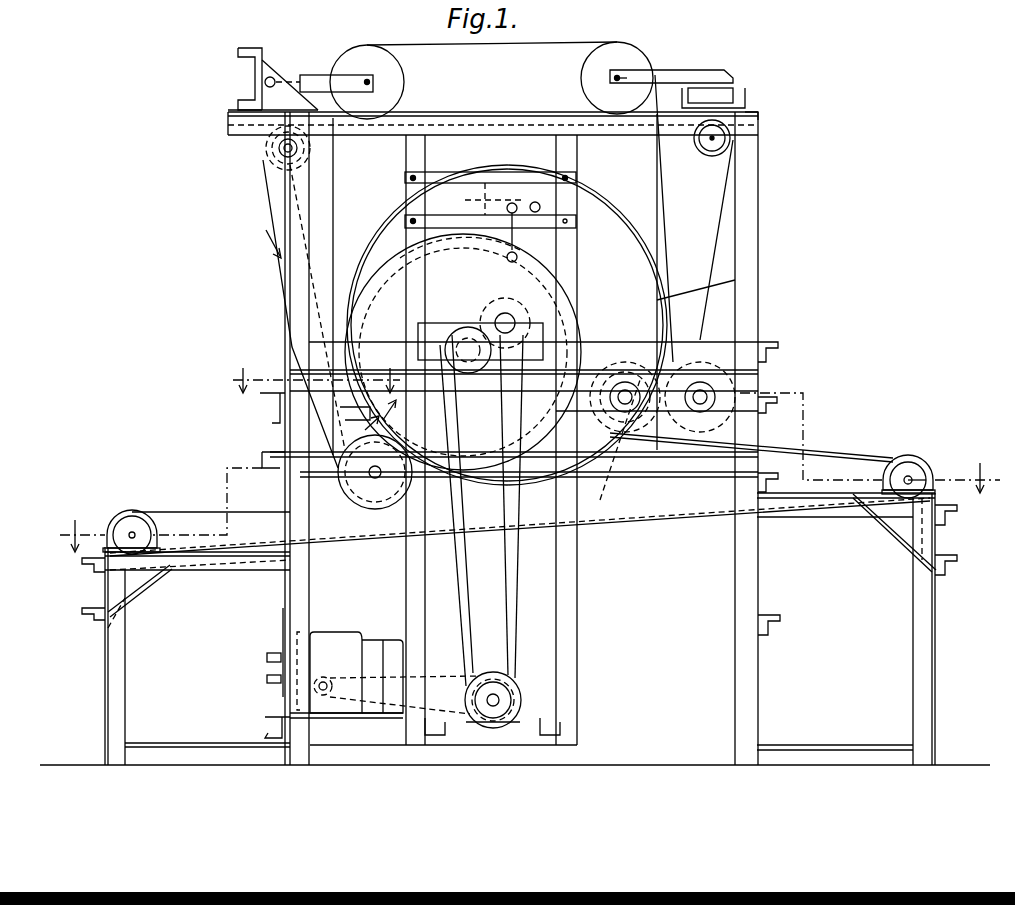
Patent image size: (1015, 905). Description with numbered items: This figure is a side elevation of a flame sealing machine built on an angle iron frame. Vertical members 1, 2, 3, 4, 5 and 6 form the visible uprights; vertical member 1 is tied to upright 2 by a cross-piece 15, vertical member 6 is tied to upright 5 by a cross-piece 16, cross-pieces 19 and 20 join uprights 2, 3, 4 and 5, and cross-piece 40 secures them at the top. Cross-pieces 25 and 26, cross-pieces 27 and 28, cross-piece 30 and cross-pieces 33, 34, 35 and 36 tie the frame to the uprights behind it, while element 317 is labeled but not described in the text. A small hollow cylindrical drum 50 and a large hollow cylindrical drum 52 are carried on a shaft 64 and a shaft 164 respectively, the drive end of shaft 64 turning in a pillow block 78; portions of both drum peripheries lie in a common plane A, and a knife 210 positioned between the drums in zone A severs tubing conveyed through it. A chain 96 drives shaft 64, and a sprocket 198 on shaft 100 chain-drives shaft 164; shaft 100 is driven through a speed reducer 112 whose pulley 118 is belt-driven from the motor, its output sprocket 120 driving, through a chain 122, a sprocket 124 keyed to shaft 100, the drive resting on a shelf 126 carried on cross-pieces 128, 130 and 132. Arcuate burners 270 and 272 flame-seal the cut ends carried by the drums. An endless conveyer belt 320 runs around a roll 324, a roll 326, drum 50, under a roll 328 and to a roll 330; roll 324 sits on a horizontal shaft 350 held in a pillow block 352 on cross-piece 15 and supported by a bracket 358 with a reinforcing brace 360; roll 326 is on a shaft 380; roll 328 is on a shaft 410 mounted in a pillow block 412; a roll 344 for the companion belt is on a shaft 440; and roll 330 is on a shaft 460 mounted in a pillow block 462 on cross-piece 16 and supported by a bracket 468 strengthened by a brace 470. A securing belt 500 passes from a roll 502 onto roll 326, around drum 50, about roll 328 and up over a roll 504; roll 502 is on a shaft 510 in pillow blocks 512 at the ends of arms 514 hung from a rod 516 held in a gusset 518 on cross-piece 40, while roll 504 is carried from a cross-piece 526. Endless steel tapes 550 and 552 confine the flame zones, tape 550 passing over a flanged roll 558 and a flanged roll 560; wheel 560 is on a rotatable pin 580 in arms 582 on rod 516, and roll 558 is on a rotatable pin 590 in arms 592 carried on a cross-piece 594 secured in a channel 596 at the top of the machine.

The vertical member 1 is at (118, 665).
The vertical member 2 is at (294, 302).
The vertical member 3 is at (412, 597).
The vertical member 4 is at (570, 597).
The vertical member 5 is at (733, 572).
The vertical member 6 is at (915, 603).
The cross-piece 15 is at (212, 565).
The cross-piece 16 is at (840, 508).
The cross-piece 19 is at (613, 462).
The cross-piece 20 is at (463, 352).
The cross-piece 25 is at (86, 622).
The cross-piece 26 is at (90, 563).
The cross-piece 27 is at (955, 560).
The cross-piece 28 is at (957, 515).
The cross-piece 30 is at (268, 452).
The cross-piece 33 is at (766, 621).
The cross-piece 34 is at (762, 490).
The cross-piece 35 is at (762, 412).
The cross-piece 36 is at (762, 343).
The cross-piece 40 is at (492, 113).
The small hollow cylindrical drum 50 is at (548, 280).
The large hollow cylindrical drum 52 is at (618, 228).
The shaft 64 is at (470, 340).
The pillow block 78 is at (458, 349).
The chain 96 is at (465, 571).
The shaft 100 is at (508, 700).
The speed reducer 112 is at (322, 638).
The pulley 118 is at (280, 617).
The sprocket 120 is at (326, 678).
The chain 122 is at (440, 678).
The sprocket 124 is at (515, 695).
The shelf 126 is at (466, 725).
The cross-piece 128 is at (272, 725).
The cross-piece 130 is at (422, 727).
The cross-piece 132 is at (537, 732).
The shaft 164 is at (508, 312).
The sprocket 198 is at (512, 597).
The knife 210 is at (358, 422).
The arcuate burner 270 is at (450, 252).
The arcuate burner 272 is at (480, 172).
The bracket 317 is at (267, 408).
The endless conveyer belt 320 is at (250, 505).
The roll 324 is at (150, 532).
The roll 326 is at (372, 504).
The roll 328 is at (648, 455).
The roll 330 is at (928, 474).
The roll 344 is at (762, 383).
The horizontal shaft 350 is at (122, 520).
The pillow block 352 is at (140, 518).
The bracket 358 is at (128, 610).
The reinforcing brace 360 is at (145, 586).
The shaft 380 is at (369, 478).
The shaft 410 is at (610, 446).
The pillow block 412 is at (626, 378).
The shaft 440 is at (700, 378).
The shaft 460 is at (910, 478).
The pillow block 462 is at (896, 458).
The bracket 468 is at (928, 541).
The brace 470 is at (897, 535).
The endless securing belt 500 is at (712, 160).
The roll 502 is at (268, 150).
The roll 504 is at (730, 140).
The shaft 510 is at (279, 148).
The pillow block 512 is at (312, 150).
The arm 514 is at (245, 126).
The rod 516 is at (274, 79).
The gusset 518 is at (262, 60).
The cross-piece 526 is at (760, 114).
The endless steel tape 550 is at (348, 232).
The endless steel tape 552 is at (744, 275).
The flanged roll 558 is at (636, 57).
The flanged roll 560 is at (392, 91).
The rotatable pin 580 is at (372, 84).
The arms 582 is at (353, 84).
The rotatable pin 590 is at (617, 78).
The arms 592 is at (720, 65).
The cross-piece 594 is at (730, 93).
The channel 596 is at (747, 96).
The common plane A is at (390, 409).